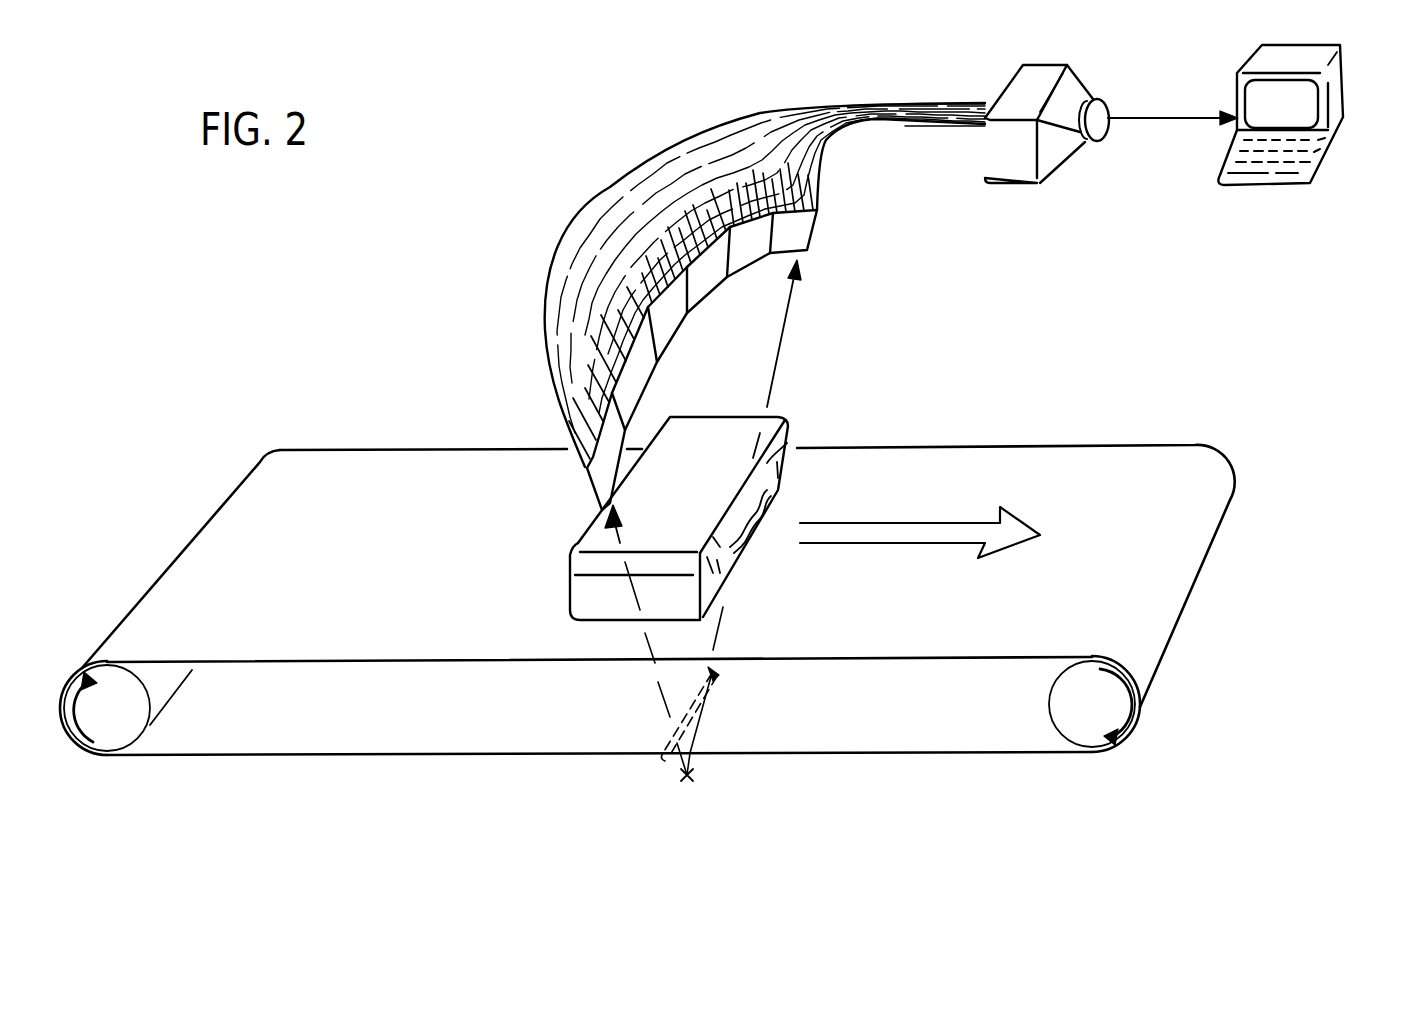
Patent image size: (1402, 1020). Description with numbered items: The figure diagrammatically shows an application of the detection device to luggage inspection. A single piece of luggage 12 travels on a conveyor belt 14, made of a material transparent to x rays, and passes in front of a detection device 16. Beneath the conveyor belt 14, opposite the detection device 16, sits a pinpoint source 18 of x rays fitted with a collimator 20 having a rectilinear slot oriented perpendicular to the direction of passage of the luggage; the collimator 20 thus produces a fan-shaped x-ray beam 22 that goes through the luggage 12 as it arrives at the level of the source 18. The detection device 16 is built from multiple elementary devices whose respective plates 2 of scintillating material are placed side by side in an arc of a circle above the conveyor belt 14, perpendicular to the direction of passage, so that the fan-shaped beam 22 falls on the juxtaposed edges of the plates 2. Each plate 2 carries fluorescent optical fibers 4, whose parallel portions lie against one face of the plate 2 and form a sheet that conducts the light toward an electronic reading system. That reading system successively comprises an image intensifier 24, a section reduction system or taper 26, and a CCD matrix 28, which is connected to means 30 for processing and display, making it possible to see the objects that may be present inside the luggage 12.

The plate 2 is at (736, 245).
The fluorescent optical fibers 4 is at (900, 117).
The luggage 12 is at (593, 518).
The conveyor belt 14 is at (293, 475).
The detection device 16 is at (652, 135).
The pinpoint source 18 is at (683, 778).
The collimator 20 is at (719, 680).
The fan-shaped x-ray beam 22 is at (783, 323).
The image intensifier 24 is at (1003, 173).
The section reduction system 26 is at (1067, 153).
The CCD matrix 28 is at (1108, 110).
The means for processing and display 30 is at (1283, 170).